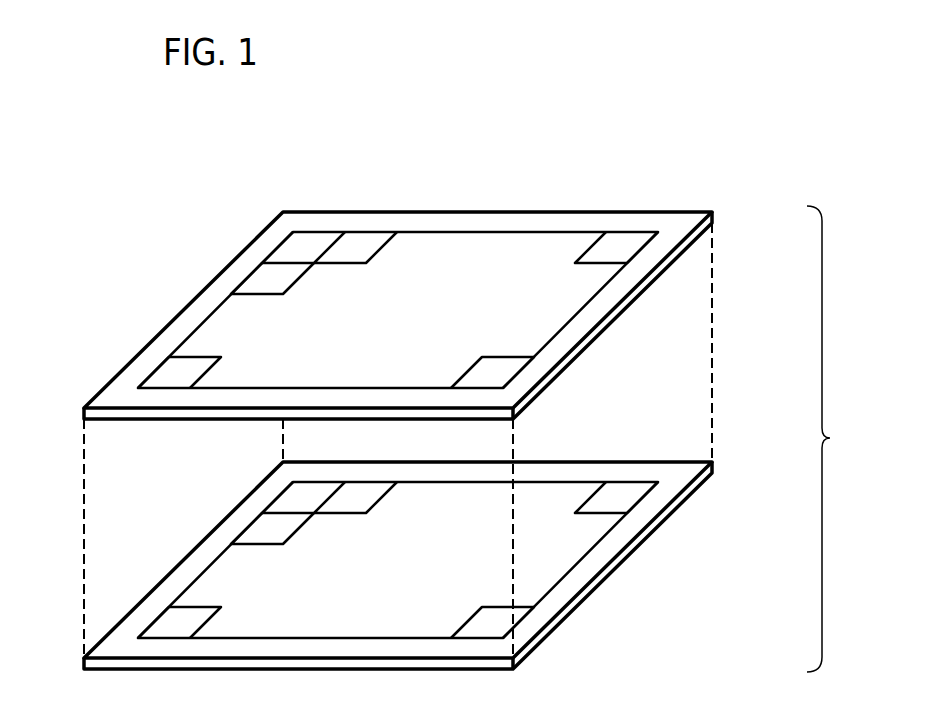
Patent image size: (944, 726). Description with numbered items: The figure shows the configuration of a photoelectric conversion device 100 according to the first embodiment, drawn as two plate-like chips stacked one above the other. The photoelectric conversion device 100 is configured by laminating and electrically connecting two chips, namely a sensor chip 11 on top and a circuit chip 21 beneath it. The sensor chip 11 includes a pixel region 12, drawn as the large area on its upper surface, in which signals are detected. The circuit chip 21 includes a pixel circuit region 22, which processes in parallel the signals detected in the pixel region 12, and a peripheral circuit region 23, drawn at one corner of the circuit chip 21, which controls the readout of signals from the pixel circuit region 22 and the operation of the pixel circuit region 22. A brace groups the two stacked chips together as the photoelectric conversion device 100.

The photoelectric conversion device 100 is at (844, 439).
The sensor chip 11 is at (610, 323).
The pixel region 12 is at (247, 323).
The circuit chip 21 is at (610, 570).
The pixel circuit region 22 is at (243, 577).
The peripheral circuit region 23 is at (135, 622).